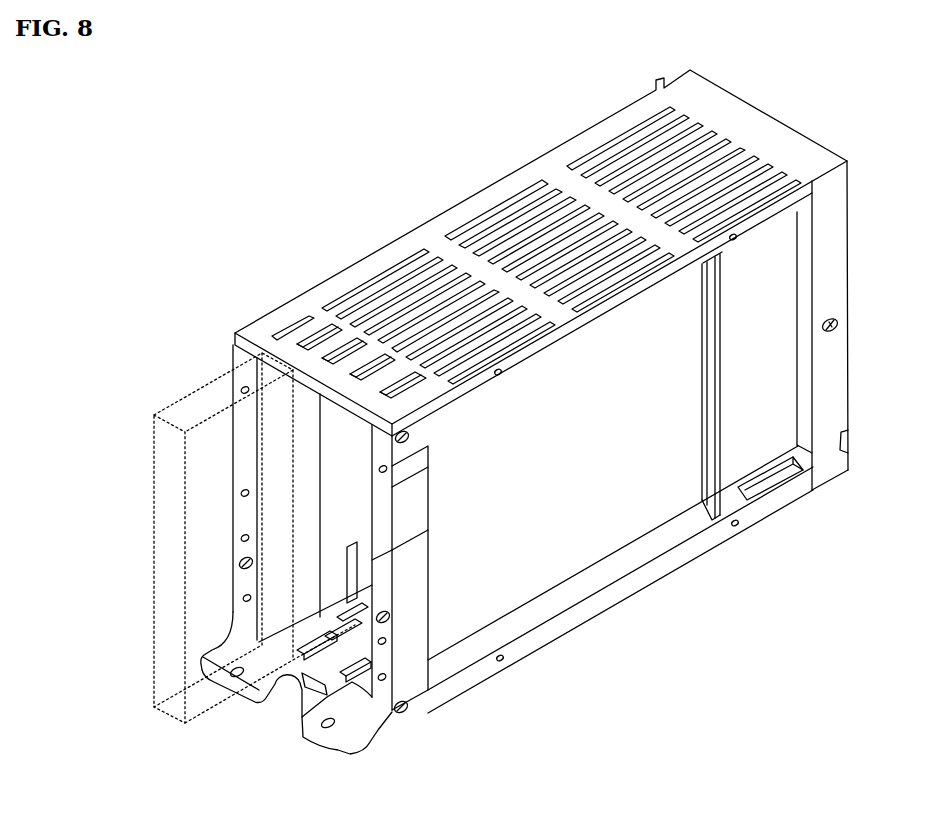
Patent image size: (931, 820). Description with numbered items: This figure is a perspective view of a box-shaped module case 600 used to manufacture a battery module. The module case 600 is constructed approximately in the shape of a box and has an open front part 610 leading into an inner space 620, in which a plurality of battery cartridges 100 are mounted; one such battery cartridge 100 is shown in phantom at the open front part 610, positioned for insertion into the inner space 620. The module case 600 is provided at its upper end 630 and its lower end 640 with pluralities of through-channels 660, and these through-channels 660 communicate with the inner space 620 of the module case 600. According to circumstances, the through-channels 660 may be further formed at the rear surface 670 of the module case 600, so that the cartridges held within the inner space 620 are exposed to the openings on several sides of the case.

The battery cartridge 100 is at (167, 548).
The module case 600 is at (172, 177).
The open front part 610 is at (277, 405).
The inner space 620 is at (298, 675).
The upper end 630 is at (437, 243).
The lower end 640 is at (560, 635).
The through-channels 660 is at (538, 192).
The rear surface 670 is at (777, 117).